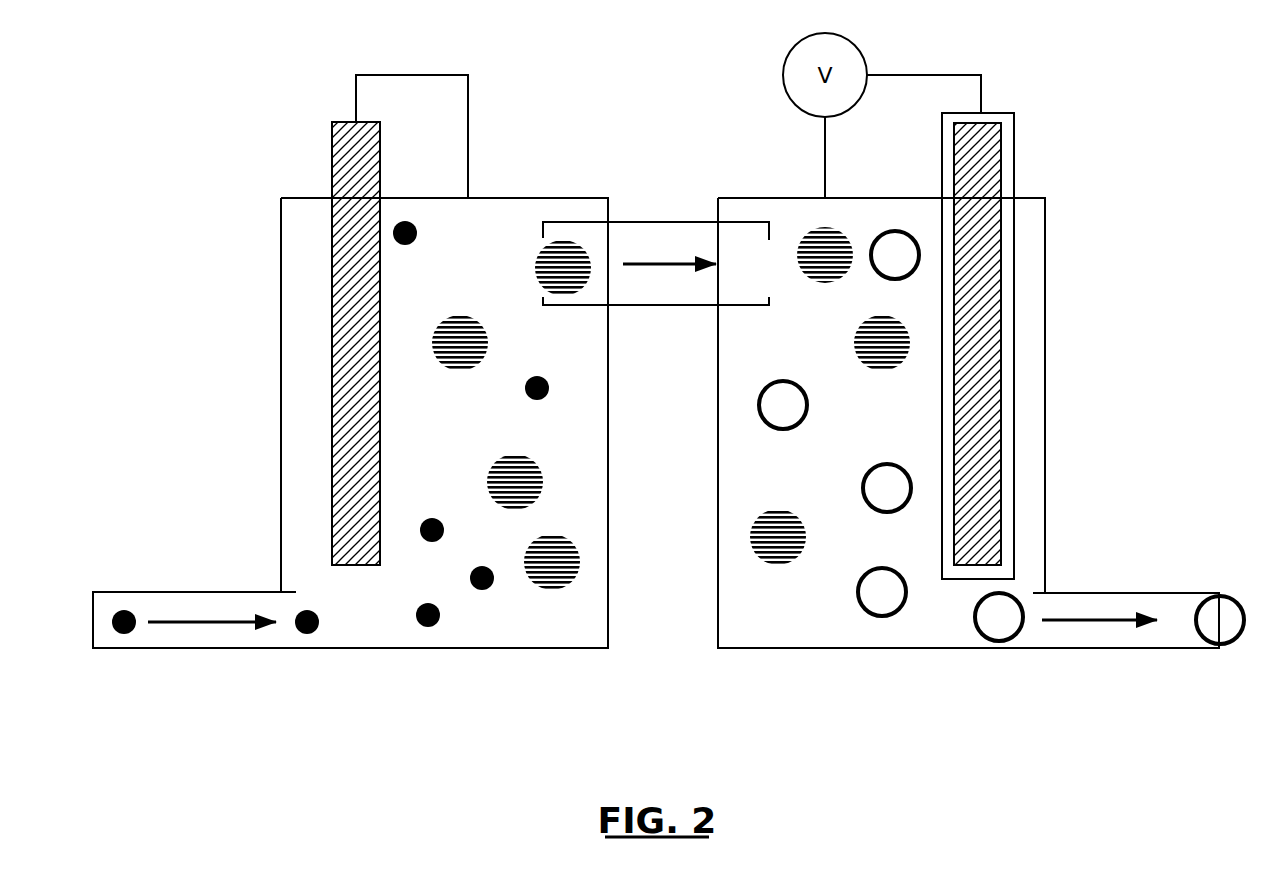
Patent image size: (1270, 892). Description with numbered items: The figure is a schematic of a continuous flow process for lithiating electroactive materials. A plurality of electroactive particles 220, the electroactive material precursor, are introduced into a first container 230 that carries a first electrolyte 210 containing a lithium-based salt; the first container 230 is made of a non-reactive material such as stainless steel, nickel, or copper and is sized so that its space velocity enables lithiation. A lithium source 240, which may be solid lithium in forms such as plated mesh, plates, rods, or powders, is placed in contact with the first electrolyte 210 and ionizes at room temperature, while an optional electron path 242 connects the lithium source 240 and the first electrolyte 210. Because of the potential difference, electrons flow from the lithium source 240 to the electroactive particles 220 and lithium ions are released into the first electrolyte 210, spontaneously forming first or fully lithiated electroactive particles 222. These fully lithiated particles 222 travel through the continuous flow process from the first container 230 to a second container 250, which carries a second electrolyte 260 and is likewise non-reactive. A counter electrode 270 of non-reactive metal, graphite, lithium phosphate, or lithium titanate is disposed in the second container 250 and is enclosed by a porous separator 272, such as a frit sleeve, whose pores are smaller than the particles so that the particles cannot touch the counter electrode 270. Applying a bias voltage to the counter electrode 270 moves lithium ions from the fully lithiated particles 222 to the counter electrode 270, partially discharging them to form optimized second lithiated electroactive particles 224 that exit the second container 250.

The first electrolyte 210 is at (437, 434).
The electroactive particles 220 is at (482, 590).
The first lithiated electroactive particles 222 is at (536, 270).
The second lithiated electroactive particles 224 is at (878, 615).
The first container 230 is at (281, 422).
The lithium source 240 is at (332, 170).
The electron path 242 is at (468, 128).
The second container 250 is at (1045, 422).
The second electrolyte 260 is at (861, 439).
The counter electrode 270 is at (1001, 183).
The separator 272 is at (1014, 144).